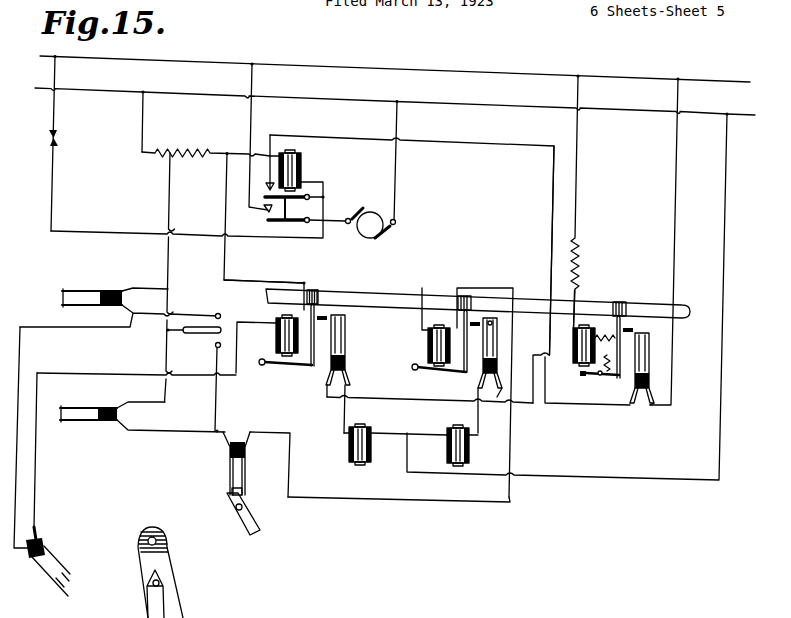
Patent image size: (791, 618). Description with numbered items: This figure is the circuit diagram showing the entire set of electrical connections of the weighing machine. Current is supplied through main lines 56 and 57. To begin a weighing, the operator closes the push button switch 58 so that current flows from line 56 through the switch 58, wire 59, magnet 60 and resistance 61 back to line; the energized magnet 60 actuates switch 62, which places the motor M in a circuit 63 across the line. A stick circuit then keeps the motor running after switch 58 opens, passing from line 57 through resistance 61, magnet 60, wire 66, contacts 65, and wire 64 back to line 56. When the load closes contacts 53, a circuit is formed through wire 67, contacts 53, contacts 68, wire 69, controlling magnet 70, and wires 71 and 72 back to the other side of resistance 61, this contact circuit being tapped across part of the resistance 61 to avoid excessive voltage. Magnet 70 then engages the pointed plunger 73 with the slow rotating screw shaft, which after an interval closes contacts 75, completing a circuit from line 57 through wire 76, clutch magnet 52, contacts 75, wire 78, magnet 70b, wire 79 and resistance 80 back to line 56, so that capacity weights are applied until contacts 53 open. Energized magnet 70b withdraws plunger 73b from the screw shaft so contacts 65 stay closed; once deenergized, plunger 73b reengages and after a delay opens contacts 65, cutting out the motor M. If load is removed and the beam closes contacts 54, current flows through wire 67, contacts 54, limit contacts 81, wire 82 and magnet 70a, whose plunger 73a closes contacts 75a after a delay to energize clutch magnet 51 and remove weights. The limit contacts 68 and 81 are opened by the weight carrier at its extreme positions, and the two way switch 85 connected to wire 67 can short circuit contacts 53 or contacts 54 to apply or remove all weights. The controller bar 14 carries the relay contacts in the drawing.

The main line 56 is at (342, 65).
The main line 57 is at (328, 97).
The switch 58 is at (58, 138).
The wire 59 is at (95, 233).
The magnet 60 is at (302, 160).
The resistance 61 is at (206, 124).
The switch 62 is at (300, 212).
The circuit 63 is at (262, 120).
The wire 64 is at (676, 252).
The contacts 65 is at (650, 338).
The wire 66 is at (552, 222).
The wire 67 is at (170, 210).
The contacts 68 is at (68, 584).
The wire 69 is at (183, 376).
The controlling magnet 70 is at (276, 340).
The magnet 70a is at (433, 345).
The magnet 70b is at (575, 345).
The wire 71 is at (263, 290).
The wire 72 is at (226, 258).
The pointed plunger 73 is at (312, 362).
The plunger 73a is at (466, 360).
The plunger 73b is at (619, 362).
The controller bar 14 is at (382, 304).
The contacts 75 is at (333, 316).
The contacts 75a is at (491, 321).
The wire 76 is at (720, 398).
The wire 78 is at (396, 399).
The wire 79 is at (576, 294).
The resistance 80 is at (579, 262).
The limit contacts 81 is at (233, 498).
The wire 82 is at (335, 500).
The two way switch 85 is at (184, 333).
The clutch magnet 51 is at (469, 448).
The clutch magnet 52 is at (349, 452).
The contacts 53 is at (62, 295).
The contacts 54 is at (60, 412).
The motor M is at (370, 238).